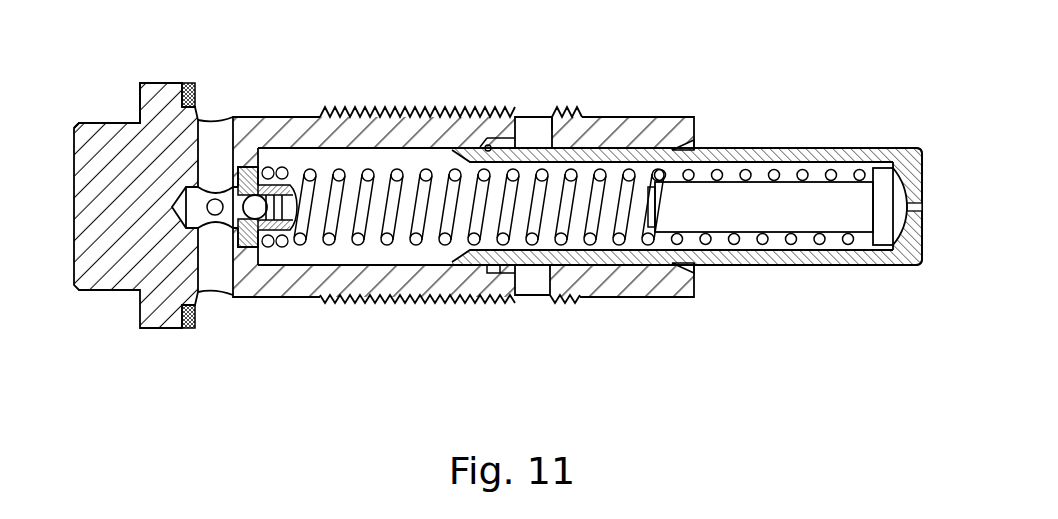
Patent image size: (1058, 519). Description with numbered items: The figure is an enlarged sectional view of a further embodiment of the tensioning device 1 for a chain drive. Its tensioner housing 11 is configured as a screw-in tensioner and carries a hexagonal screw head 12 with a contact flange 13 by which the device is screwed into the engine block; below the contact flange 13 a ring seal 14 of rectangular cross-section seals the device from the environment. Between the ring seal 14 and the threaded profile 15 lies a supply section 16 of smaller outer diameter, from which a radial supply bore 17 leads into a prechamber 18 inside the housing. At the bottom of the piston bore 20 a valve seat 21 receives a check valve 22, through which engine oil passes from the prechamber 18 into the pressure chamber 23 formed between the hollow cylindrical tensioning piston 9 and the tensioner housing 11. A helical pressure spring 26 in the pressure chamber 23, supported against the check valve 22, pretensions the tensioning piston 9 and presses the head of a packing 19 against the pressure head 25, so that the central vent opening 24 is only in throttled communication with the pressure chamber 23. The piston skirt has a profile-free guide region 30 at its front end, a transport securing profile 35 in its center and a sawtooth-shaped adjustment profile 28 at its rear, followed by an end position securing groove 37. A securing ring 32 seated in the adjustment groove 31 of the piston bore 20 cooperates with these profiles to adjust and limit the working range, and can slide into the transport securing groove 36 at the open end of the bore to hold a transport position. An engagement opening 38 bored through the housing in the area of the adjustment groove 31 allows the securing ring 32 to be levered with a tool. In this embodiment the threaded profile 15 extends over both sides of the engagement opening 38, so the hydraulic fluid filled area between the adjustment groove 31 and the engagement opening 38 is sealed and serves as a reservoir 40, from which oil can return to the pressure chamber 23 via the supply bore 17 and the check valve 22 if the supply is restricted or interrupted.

The tensioning device 1 is at (113, 103).
The tensioning piston 9 is at (623, 125).
The tensioner housing 11 is at (408, 135).
The hexagonal screw head 12 is at (112, 278).
The contact flange 13 is at (157, 92).
The ring seal 14 is at (188, 328).
The threaded profile 15 is at (360, 112).
The supply section 16 is at (248, 117).
The supply bore 17 is at (207, 130).
The prechamber 18 is at (192, 222).
The packing 19 is at (815, 220).
The piston bore 20 is at (405, 257).
The valve seat 21 is at (248, 247).
The check valve 22 is at (268, 247).
The pressure chamber 23 is at (297, 163).
The vent opening 24 is at (922, 207).
The pressure head 25 is at (922, 176).
The pressure spring 26 is at (765, 242).
The adjustment profile 28 is at (626, 268).
The guide region 30 is at (795, 148).
The adjustment groove 31 is at (536, 127).
The securing ring 32 is at (487, 138).
The transport securing profile 35 is at (684, 262).
The transport securing groove 36 is at (683, 146).
The end position securing groove 37 is at (490, 275).
The engagement opening 38 is at (550, 117).
The reservoir 40 is at (528, 297).